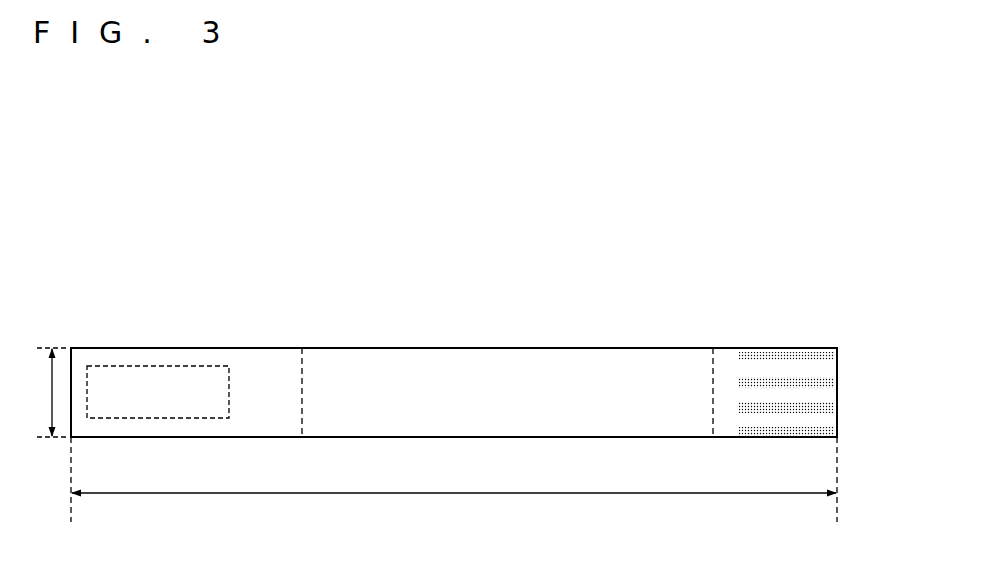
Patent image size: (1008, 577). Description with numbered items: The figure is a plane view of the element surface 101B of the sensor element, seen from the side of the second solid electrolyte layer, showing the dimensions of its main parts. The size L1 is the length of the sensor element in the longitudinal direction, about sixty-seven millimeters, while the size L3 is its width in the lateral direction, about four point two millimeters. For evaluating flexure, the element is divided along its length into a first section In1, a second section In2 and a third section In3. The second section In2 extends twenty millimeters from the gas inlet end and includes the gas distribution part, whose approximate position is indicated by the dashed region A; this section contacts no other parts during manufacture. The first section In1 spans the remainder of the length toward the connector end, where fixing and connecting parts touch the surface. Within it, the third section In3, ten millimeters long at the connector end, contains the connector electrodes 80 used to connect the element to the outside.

The element surface 101B is at (485, 362).
The connector electrode 80 is at (825, 380).
The region A is at (161, 400).
The first section In1 is at (836, 438).
The second section In2 is at (72, 348).
The third section In3 is at (714, 348).
The size L1 is at (454, 484).
The size L3 is at (43, 392).